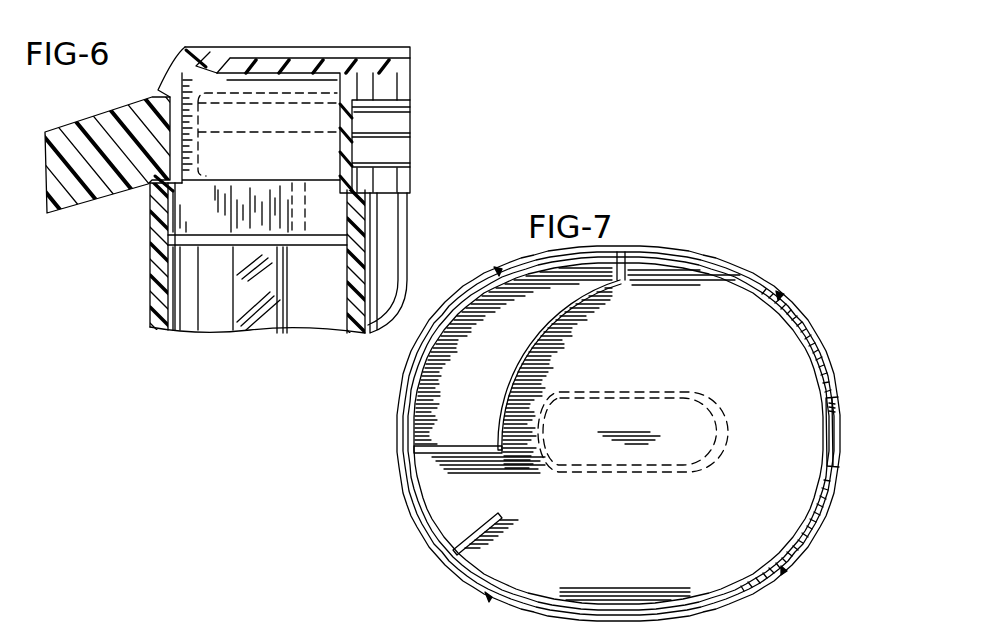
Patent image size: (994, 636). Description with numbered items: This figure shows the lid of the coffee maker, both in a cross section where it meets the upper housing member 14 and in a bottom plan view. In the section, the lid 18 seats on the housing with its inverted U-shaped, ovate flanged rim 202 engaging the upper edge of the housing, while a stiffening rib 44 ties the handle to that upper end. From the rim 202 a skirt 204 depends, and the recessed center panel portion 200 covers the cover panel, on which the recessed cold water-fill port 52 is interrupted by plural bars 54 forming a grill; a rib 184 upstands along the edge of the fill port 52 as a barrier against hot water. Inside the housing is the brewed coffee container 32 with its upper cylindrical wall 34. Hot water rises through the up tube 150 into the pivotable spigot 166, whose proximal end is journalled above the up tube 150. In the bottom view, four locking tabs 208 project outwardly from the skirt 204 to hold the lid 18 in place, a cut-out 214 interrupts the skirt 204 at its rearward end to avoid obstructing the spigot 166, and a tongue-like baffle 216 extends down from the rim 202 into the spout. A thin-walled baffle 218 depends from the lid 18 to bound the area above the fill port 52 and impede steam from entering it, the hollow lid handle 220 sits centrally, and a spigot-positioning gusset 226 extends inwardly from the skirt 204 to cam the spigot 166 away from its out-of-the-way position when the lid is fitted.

In FIG. 6, the upper housing member 14 is at (150, 305).
In FIG. 6, the lid 18 is at (298, 47).
In FIG. 7, the lid 18 is at (757, 276).
In FIG. 6, the brewed coffee container 32 is at (348, 321).
In FIG. 6, the upper cylindrical wall 34 is at (366, 271).
In FIG. 6, the stiffening rib 44 is at (67, 134).
In FIG. 6, the cold water-fill port 52 is at (325, 223).
In FIG. 6, the bars 54 is at (306, 242).
In FIG. 6, the up tube 150 is at (253, 326).
In FIG. 6, the spigot 166 is at (414, 121).
In FIG. 6, the rib 184 is at (265, 178).
In FIG. 6, the center panel portion 200 is at (368, 47).
In FIG. 7, the center panel portion 200 is at (815, 511).
In FIG. 6, the flanged rim 202 is at (205, 47).
In FIG. 6, the skirt 204 is at (150, 186).
In FIG. 7, the skirt 204 is at (808, 350).
In FIG. 7, the locking tabs 208 is at (496, 268).
In FIG. 7, the cut-out 214 is at (437, 527).
In FIG. 7, the baffle 216 is at (836, 424).
In FIG. 6, the baffle 218 is at (362, 163).
In FIG. 7, the baffle 218 is at (560, 310).
In FIG. 7, the lid handle 220 is at (668, 390).
In FIG. 7, the spigot-positioning gusset 226 is at (501, 513).